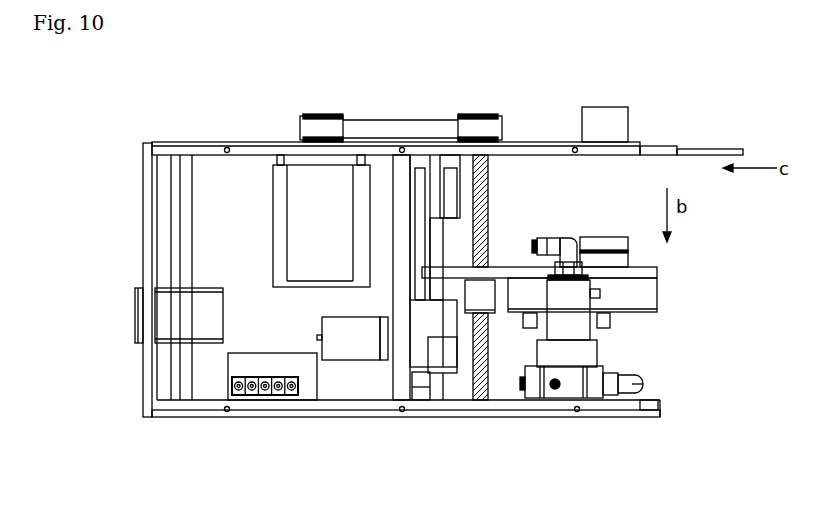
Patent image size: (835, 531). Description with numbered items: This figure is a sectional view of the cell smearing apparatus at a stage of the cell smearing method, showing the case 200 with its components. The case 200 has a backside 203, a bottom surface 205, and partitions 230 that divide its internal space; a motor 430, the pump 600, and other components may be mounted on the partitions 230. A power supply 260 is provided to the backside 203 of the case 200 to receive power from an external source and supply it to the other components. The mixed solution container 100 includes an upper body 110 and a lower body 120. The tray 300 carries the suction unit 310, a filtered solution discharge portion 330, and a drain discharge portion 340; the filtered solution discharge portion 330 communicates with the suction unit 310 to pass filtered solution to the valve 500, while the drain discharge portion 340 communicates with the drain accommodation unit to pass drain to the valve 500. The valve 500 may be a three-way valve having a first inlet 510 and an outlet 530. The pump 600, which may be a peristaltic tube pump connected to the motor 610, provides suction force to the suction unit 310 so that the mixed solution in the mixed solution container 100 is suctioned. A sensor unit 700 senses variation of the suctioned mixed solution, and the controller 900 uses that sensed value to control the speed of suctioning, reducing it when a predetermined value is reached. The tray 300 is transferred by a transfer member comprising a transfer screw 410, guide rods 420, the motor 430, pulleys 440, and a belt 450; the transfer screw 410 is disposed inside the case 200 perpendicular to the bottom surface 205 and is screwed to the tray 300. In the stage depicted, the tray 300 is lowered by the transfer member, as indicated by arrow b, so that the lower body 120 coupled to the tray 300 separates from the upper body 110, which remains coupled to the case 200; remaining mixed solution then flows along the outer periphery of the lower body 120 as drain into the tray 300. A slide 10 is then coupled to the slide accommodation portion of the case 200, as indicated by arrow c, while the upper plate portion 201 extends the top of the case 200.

The slide 10 is at (710, 148).
The mixed solution container 100 is at (649, 105).
The upper body 110 is at (625, 120).
The lower body 120 is at (603, 237).
The case 200 is at (185, 131).
The top plate extension 201 is at (660, 156).
The backside 203 is at (143, 351).
The bottom surface 205 is at (267, 402).
The partitions 230 is at (397, 380).
The power supply 260 is at (203, 328).
The tray 300 is at (676, 295).
The suction unit 310 is at (623, 262).
The filtered solution discharge portion 330 is at (612, 322).
The drain discharge portion 340 is at (522, 325).
The transfer screw 410 is at (482, 208).
The guide rods 420 is at (437, 158).
The motor 430 is at (293, 197).
The pulleys 440 is at (317, 115).
The belt 450 is at (370, 123).
The valve 500 is at (601, 414).
The first inlet 510 is at (547, 238).
The outlet 530 is at (645, 381).
The pump 600 is at (418, 350).
The motor 610 is at (337, 352).
The sensor unit 700 is at (453, 188).
The controller 900 is at (253, 360).